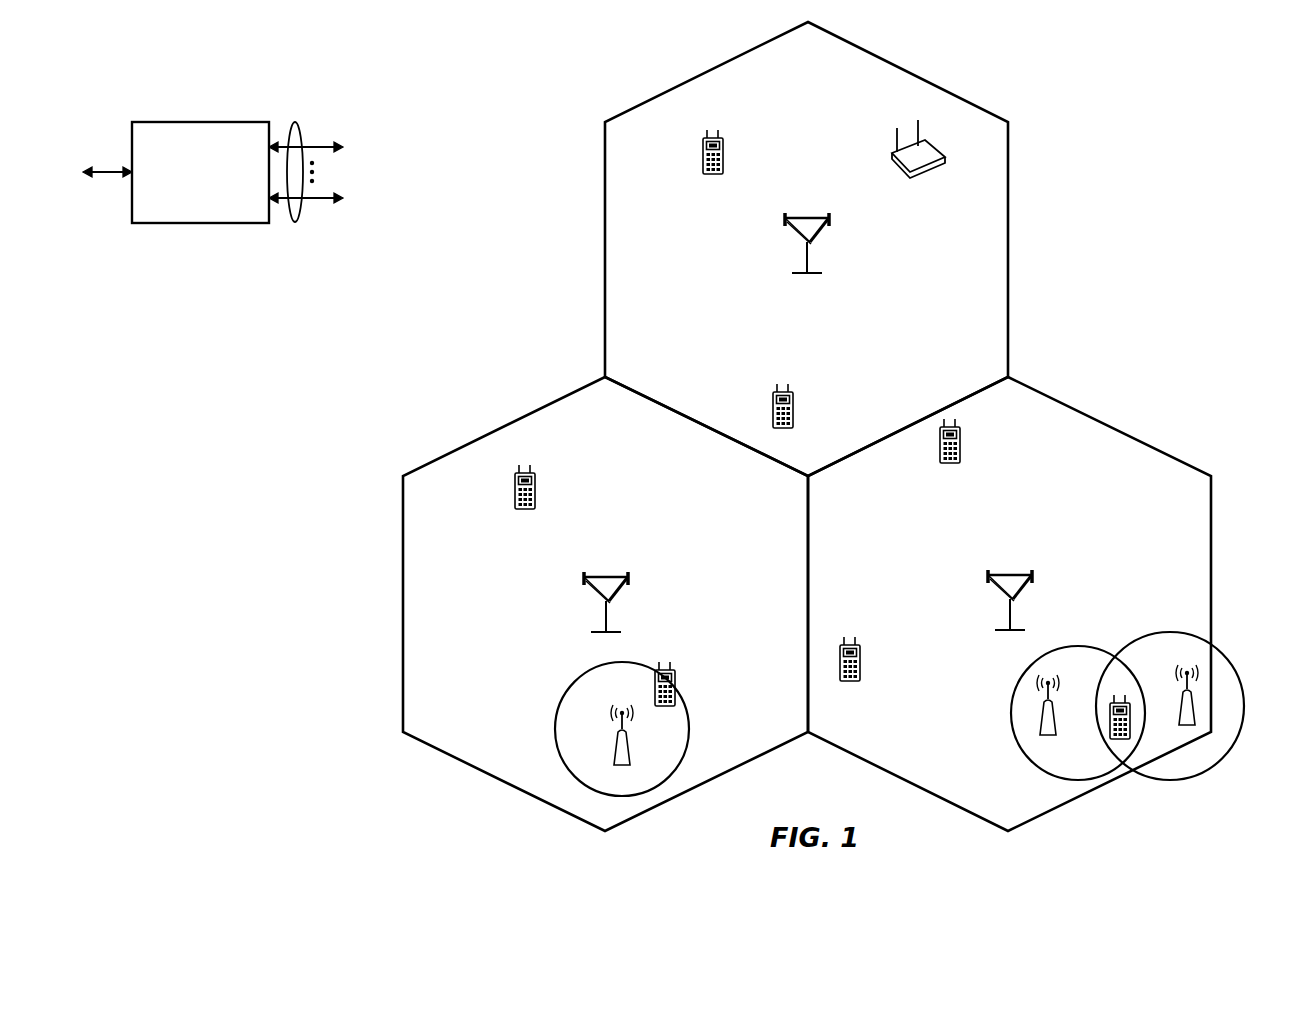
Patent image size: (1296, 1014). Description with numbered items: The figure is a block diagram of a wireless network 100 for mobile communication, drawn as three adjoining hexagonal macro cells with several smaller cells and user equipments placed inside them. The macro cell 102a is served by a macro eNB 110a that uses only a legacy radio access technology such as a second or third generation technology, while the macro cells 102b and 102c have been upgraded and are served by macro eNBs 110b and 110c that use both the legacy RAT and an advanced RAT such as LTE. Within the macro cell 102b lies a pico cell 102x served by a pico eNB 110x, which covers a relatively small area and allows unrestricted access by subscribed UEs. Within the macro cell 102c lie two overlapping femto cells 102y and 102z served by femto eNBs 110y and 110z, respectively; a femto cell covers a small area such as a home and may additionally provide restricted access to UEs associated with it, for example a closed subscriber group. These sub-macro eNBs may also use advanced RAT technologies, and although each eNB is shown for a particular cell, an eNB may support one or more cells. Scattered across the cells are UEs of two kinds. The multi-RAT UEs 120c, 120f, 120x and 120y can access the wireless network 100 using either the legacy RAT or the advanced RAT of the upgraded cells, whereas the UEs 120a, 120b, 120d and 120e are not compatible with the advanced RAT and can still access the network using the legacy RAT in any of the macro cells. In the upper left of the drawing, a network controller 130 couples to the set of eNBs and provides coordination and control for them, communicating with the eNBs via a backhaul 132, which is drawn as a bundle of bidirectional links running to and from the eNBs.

The wireless network 100 is at (1145, 89).
The macro cell 102a is at (912, 72).
The macro cell 102b is at (503, 430).
The macro cell 102c is at (1130, 431).
The pico cell 102x is at (575, 680).
The femto cell 102y is at (1020, 680).
The femto cell 102z is at (1167, 632).
The macro eNB 110a is at (803, 218).
The macro eNB 110b is at (608, 562).
The macro eNB 110c is at (1008, 574).
The pico eNB 110x is at (629, 752).
The femto eNB 110y is at (1054, 723).
The femto eNB 110z is at (1193, 713).
The UE 120a is at (703, 146).
The UE 120b is at (930, 142).
The multi-RAT UE 120c is at (772, 400).
The UE 120d is at (960, 440).
The UE 120e is at (858, 672).
The multi-RAT UE 120f is at (515, 500).
The multi-RAT UE 120x is at (675, 684).
The multi-RAT UE 120y is at (1110, 730).
The network controller 130 is at (198, 121).
The backhaul 132 is at (300, 120).